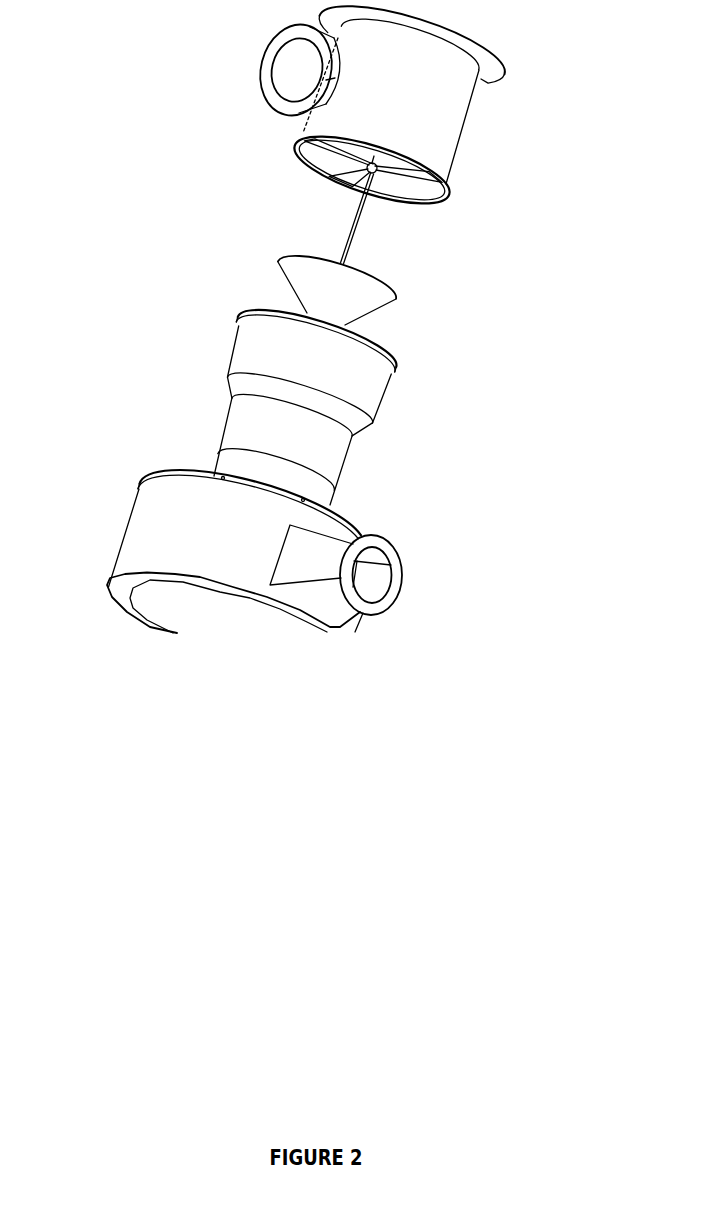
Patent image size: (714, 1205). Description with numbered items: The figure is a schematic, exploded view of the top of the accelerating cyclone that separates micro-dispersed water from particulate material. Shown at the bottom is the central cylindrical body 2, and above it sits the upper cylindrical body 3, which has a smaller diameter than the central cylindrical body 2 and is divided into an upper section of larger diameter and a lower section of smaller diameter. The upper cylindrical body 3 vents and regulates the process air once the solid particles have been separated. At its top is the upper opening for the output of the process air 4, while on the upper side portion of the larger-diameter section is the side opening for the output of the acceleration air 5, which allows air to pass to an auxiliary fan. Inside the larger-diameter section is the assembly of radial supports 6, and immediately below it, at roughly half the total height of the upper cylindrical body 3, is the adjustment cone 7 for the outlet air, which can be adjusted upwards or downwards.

The central cylindrical body 2 is at (143, 539).
The upper cylindrical body 3 is at (412, 135).
The upper opening for the output of the process air 4 is at (452, 24).
The side opening for the output of the acceleration air 5 is at (302, 88).
The assembly of radial supports 6 is at (322, 160).
The adjustment cone 7 is at (373, 302).